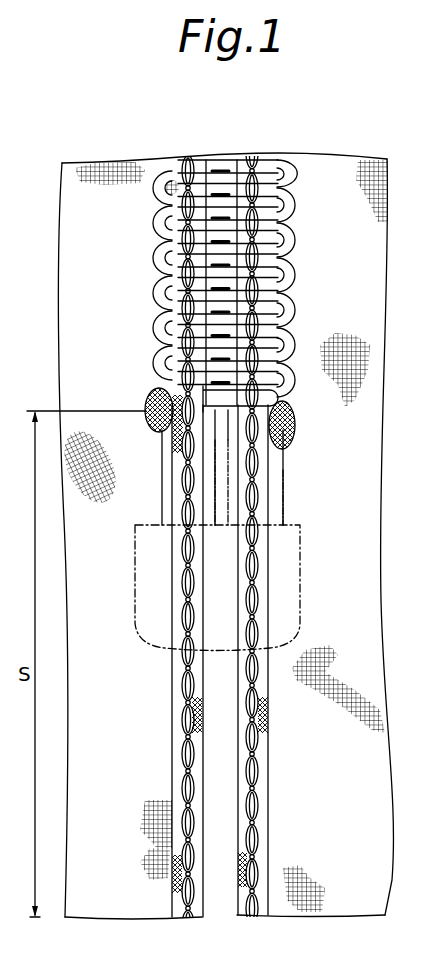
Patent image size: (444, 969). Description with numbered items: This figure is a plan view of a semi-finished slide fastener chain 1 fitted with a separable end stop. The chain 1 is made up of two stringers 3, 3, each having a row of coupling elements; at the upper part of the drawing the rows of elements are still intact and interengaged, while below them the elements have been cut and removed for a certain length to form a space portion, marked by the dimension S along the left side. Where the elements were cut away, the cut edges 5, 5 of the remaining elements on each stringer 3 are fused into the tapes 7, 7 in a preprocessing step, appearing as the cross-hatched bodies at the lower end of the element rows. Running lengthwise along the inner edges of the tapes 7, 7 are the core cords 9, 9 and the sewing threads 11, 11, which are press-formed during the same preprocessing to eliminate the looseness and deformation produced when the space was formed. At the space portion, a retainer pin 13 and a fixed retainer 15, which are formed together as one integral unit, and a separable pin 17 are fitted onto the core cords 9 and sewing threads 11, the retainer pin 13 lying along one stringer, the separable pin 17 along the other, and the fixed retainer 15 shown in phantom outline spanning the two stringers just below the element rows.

The chain 1 is at (232, 152).
The stringer 3 is at (104, 207).
The cut edge 5 is at (152, 400).
The tape 7 is at (110, 268).
The core cord 9 is at (172, 708).
The sewing thread 11 is at (182, 757).
The retainer pin 13 is at (167, 481).
The fixed retainer 15 is at (217, 628).
The separable pin 17 is at (278, 497).